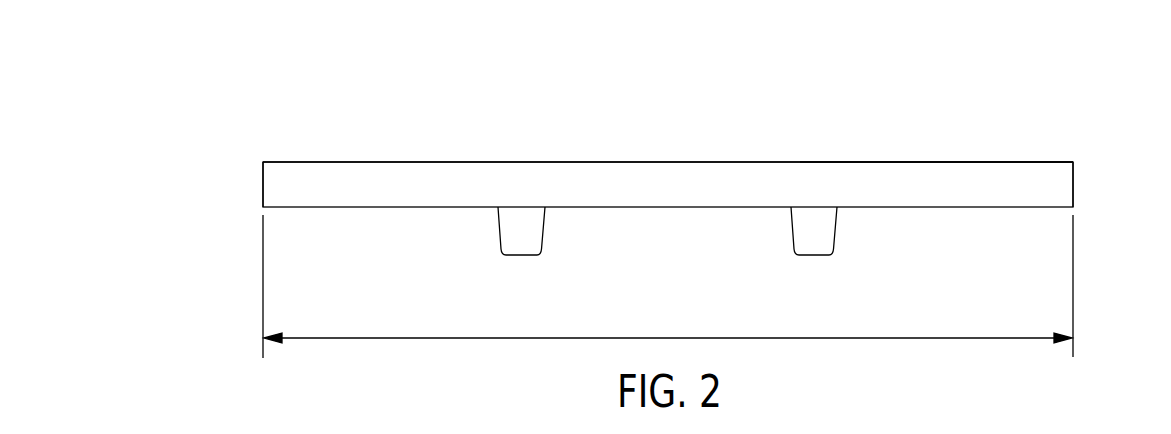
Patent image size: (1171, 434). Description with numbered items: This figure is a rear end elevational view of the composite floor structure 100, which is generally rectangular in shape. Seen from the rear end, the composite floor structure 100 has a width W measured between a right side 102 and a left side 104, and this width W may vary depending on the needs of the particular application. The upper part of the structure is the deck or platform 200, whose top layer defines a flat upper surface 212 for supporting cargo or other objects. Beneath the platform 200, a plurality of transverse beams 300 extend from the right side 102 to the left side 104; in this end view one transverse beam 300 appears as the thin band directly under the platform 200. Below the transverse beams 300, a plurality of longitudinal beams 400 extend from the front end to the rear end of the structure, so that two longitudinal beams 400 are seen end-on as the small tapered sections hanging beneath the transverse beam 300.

The composite floor structure 100 is at (1030, 114).
The right side 102 is at (1076, 178).
The left side 104 is at (261, 183).
The platform 200 is at (694, 162).
The upper surface 212 is at (884, 162).
The transverse beams 300 is at (375, 184).
The longitudinal beams 400 is at (530, 242).
The width W is at (668, 286).